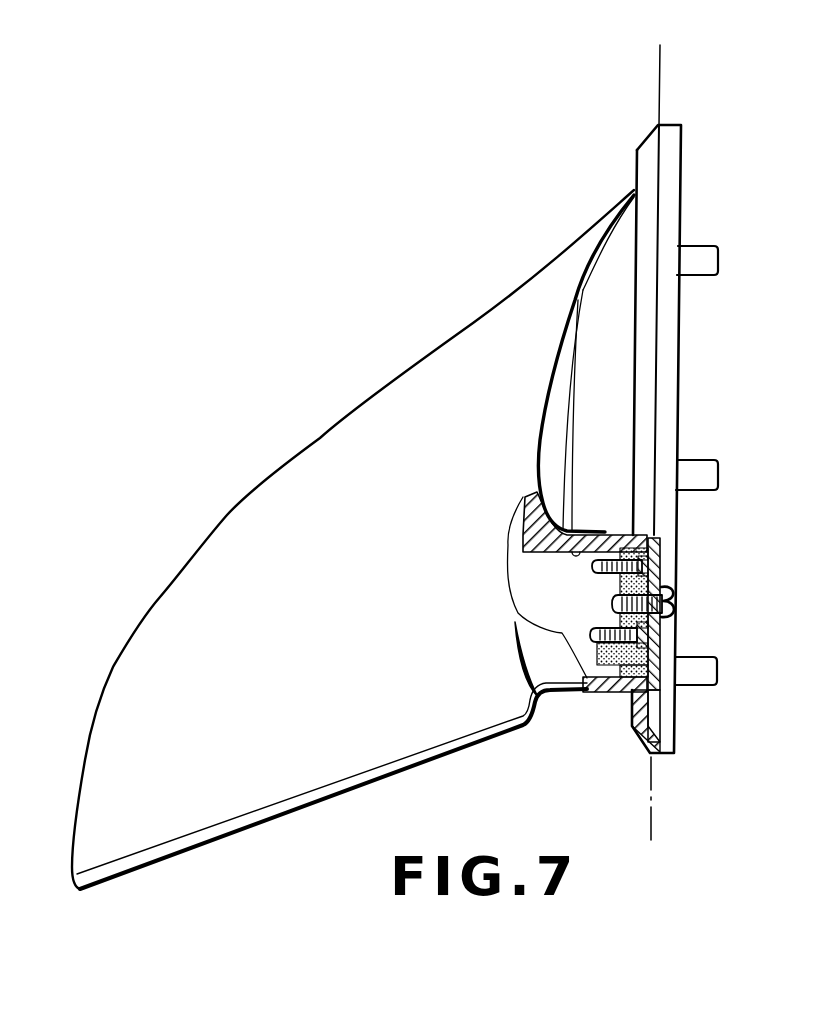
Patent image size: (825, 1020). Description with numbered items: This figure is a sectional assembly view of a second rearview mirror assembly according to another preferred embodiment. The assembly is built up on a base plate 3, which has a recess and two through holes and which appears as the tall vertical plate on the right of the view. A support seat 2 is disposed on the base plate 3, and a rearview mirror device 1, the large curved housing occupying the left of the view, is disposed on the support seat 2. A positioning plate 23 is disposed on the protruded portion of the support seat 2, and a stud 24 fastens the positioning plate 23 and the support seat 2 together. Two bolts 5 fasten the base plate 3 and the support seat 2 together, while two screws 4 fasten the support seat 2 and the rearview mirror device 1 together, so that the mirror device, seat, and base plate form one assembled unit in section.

The rearview mirror device 1 is at (485, 347).
The support seat 2 is at (660, 650).
The base plate 3 is at (670, 189).
The screw 4 is at (660, 623).
The bolt 5 is at (673, 593).
The positioning plate 23 is at (567, 536).
The stud 24 is at (650, 538).